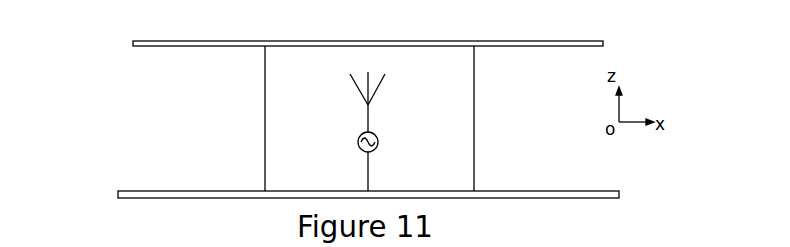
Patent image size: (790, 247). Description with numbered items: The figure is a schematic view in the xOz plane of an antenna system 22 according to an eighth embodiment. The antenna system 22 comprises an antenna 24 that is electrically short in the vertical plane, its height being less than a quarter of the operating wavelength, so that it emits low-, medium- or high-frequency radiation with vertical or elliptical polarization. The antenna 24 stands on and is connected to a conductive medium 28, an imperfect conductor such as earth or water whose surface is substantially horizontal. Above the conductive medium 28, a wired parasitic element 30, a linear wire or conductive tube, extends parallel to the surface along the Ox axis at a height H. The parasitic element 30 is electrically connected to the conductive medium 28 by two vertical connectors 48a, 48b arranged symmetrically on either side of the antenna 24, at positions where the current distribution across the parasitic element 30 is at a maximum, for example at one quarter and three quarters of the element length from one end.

The antenna system 22 is at (89, 111).
The antenna 24 is at (370, 117).
The conductive medium 28 is at (600, 198).
The wired parasitic element 30 is at (590, 41).
The first vertical connector 48a is at (265, 133).
The second vertical connector 48b is at (474, 118).